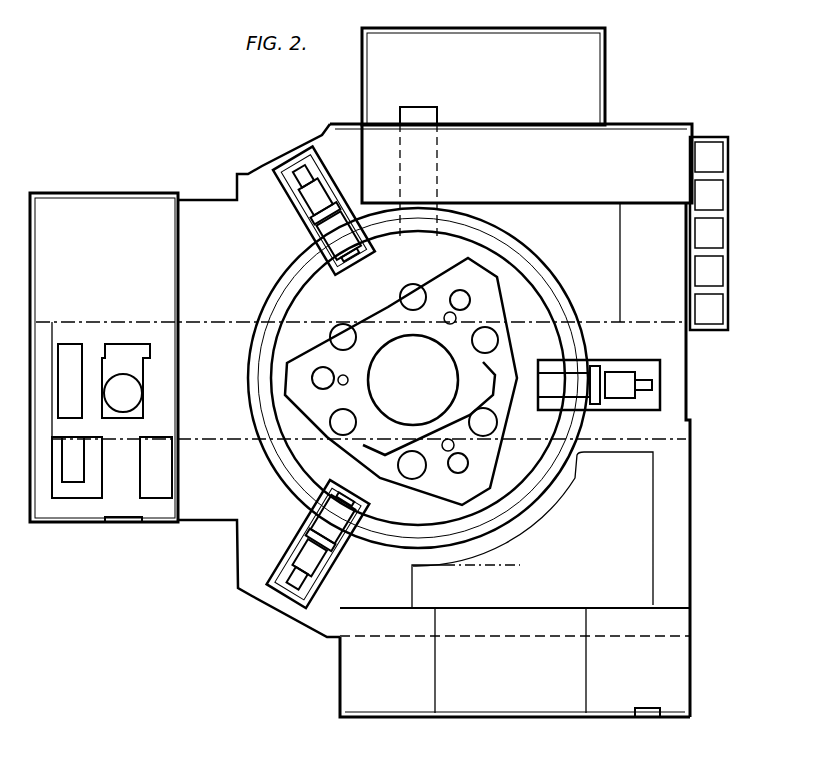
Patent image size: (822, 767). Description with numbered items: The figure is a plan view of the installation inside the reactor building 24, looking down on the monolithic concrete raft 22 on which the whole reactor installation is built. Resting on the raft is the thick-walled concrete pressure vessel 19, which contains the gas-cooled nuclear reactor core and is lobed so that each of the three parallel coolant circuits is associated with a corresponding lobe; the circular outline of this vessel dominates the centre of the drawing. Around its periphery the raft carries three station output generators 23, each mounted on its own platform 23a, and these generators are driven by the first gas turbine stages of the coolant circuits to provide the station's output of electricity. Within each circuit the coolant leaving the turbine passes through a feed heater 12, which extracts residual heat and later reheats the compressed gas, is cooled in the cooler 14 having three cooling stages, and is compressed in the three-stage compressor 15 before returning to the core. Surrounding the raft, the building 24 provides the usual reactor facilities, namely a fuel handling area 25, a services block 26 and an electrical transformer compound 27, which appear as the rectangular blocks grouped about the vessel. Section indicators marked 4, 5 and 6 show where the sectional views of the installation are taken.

The section line 4- 4 is at (280, 386).
The section line 5- 5 is at (362, 283).
The section line 6- 6 is at (357, 275).
The feed heater 12 is at (413, 284).
The cooler 14 is at (468, 295).
The compressor 15 is at (456, 314).
The concrete pressure vessel 19 is at (515, 372).
The monolithic concrete raft 22 is at (560, 480).
The station output generator 23 is at (330, 236).
The platform 23a is at (304, 160).
The building 24 is at (692, 135).
The fuel handling area 25 is at (145, 200).
The services block 26 is at (612, 150).
The electrical transformer compound 27 is at (598, 90).